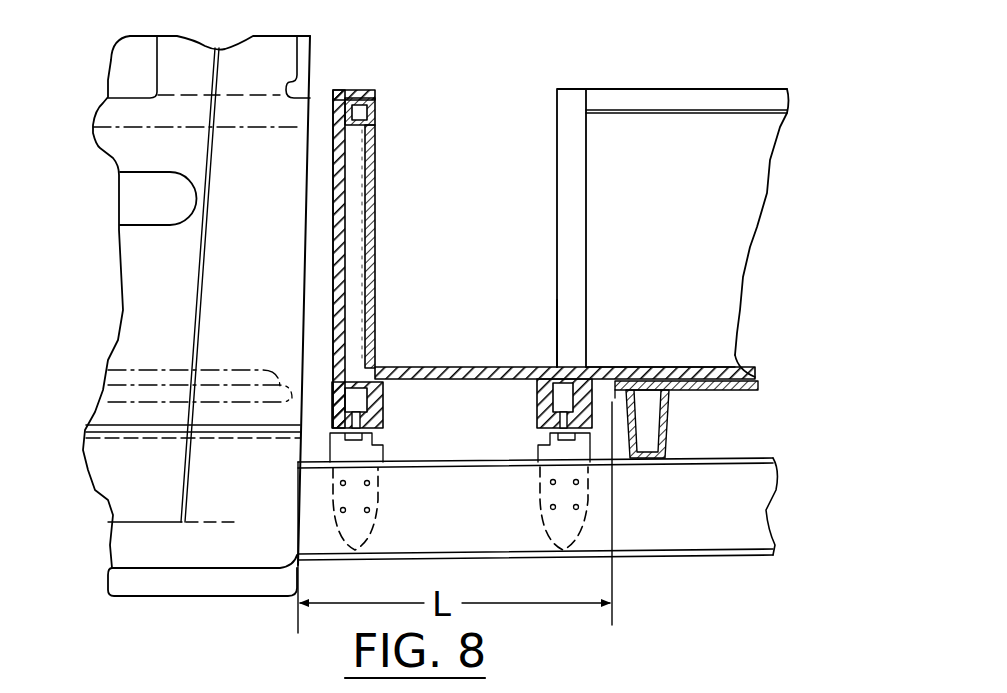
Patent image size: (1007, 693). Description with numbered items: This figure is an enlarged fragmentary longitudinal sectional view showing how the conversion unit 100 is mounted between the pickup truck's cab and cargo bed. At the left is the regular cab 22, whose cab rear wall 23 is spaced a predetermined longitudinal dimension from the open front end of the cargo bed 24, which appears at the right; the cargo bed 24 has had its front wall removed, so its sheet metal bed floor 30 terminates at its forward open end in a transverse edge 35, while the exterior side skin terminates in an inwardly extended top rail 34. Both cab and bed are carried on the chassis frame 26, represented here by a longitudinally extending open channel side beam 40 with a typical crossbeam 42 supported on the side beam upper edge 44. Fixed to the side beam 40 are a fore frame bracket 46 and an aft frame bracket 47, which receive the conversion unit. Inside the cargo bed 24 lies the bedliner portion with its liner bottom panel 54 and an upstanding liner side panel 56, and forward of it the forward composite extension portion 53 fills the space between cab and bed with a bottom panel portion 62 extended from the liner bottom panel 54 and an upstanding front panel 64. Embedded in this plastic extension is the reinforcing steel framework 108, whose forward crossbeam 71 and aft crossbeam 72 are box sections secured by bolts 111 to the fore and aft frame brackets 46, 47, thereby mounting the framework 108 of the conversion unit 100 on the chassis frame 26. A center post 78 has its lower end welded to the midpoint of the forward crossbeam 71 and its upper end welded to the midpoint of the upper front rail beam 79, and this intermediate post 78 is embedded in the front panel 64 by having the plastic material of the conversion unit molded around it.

The regular cab 22 is at (118, 308).
The cab rear wall 23 is at (312, 73).
The cargo bed 24 is at (707, 184).
The chassis frame 26 is at (598, 460).
The bed floor 30 is at (758, 375).
The top rail 34 is at (637, 88).
The transverse edge 35 is at (607, 369).
The side beam 40 is at (748, 518).
The crossbeam 42 is at (669, 421).
The side beam upper edge 44 is at (752, 458).
The fore frame bracket 46 is at (367, 494).
The aft frame bracket 47 is at (578, 492).
The forward composite extension portion 53 is at (412, 226).
The liner bottom panel 54 is at (712, 367).
The liner side panel 56 is at (735, 233).
The bottom panel portion 62 is at (449, 367).
The front panel 64 is at (338, 241).
The forward crossbeam 71 is at (384, 404).
The aft crossbeam 72 is at (537, 400).
The center post 78 is at (357, 240).
The upper front rail beam 79 is at (363, 108).
The conversion unit 100 is at (724, 184).
The framework 108 is at (376, 287).
The bolts 111 is at (538, 441).